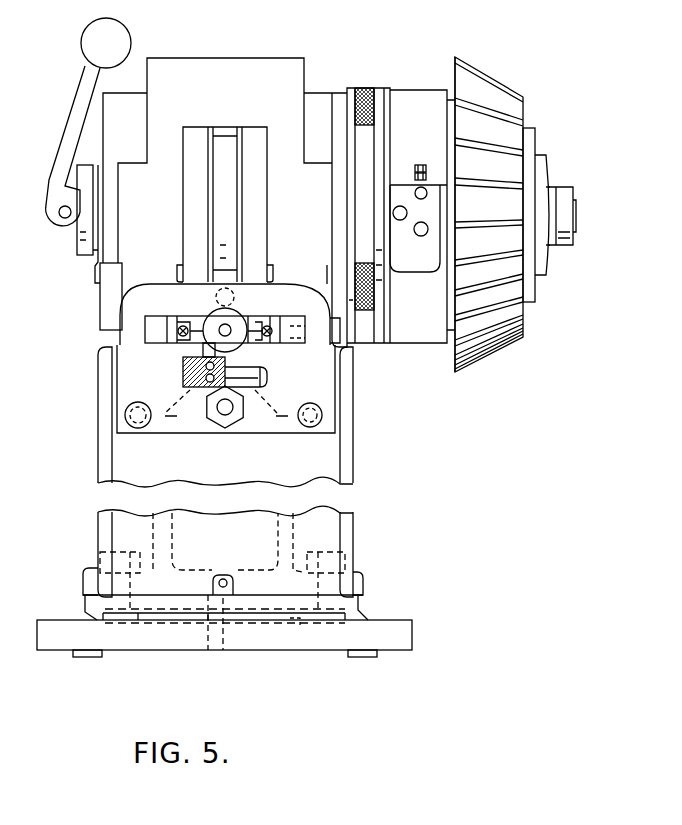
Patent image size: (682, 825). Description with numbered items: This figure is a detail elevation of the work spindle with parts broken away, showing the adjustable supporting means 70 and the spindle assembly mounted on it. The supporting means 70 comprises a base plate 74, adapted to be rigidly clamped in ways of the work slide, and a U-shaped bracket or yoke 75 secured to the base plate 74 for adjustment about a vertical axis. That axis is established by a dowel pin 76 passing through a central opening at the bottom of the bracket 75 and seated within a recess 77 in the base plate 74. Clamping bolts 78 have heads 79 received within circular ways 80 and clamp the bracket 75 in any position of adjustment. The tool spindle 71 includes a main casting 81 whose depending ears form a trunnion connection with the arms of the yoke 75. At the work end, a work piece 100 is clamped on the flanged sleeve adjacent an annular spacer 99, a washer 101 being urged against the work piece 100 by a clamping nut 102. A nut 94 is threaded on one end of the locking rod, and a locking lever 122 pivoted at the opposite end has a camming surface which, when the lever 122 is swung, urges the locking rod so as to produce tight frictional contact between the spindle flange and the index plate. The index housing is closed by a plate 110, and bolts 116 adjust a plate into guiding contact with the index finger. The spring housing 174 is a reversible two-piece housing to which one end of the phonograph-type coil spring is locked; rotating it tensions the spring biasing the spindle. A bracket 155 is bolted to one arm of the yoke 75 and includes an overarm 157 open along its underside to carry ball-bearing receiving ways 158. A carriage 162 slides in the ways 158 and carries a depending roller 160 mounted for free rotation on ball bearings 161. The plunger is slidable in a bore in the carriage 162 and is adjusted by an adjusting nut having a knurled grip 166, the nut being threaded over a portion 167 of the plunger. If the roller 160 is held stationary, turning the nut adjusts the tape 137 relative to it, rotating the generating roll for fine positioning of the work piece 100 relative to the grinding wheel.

The locking lever 122 is at (78, 103).
The main casting 81 is at (148, 262).
The tape 137 is at (225, 135).
The tool spindle 71 is at (328, 88).
The two-piece housing 174 is at (365, 140).
The plate 110 is at (412, 258).
The bolts 116 is at (422, 150).
The annular spacer 99 is at (455, 122).
The work piece 100 is at (493, 320).
The washer 101 is at (530, 142).
The clamping nut 102 is at (542, 166).
The nut 94 is at (566, 196).
The overarm 157 is at (290, 300).
The carriage 162 is at (201, 302).
The threaded portion of the plunger 167 is at (229, 327).
The knurled grip 166 is at (210, 337).
The ball-bearing receiving ways 158 is at (175, 343).
The ball bearings 161 is at (183, 370).
The roller 160 is at (258, 373).
The bracket 155 is at (318, 380).
The adjustable supporting means 70 is at (352, 444).
The U-shaped bracket 75 is at (348, 530).
The dowel pin 76 is at (223, 575).
The clamping bolts 78 is at (330, 563).
The heads 79 is at (352, 603).
The base plate 74 is at (380, 635).
The recess 77 is at (222, 655).
The circular ways 80 is at (295, 630).